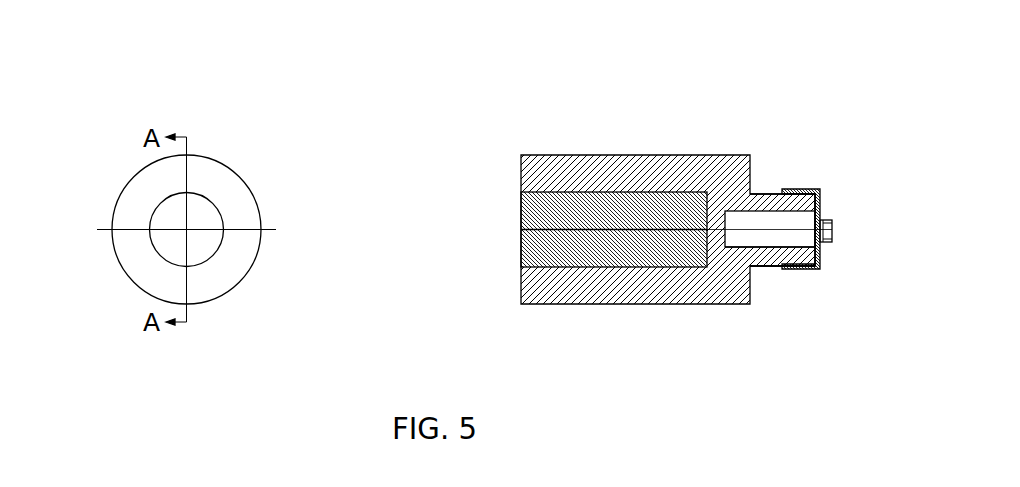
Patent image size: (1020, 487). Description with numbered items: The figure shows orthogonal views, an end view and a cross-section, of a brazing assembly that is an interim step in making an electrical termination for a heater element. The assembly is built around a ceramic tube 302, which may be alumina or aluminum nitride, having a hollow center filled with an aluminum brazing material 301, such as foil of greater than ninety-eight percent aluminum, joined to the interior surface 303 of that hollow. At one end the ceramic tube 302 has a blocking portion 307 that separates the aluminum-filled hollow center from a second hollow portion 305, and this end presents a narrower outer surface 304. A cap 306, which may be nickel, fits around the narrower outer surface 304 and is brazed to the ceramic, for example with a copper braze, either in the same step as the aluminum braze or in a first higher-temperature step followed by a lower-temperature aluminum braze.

The brazing material 301 is at (148, 240).
The ceramic tube 302 is at (237, 170).
The interior surface 303 is at (628, 263).
The narrower outer surface 304 is at (762, 190).
The second hollow portion 305 is at (770, 258).
The cap 306 is at (817, 186).
The blocking portion 307 is at (728, 232).